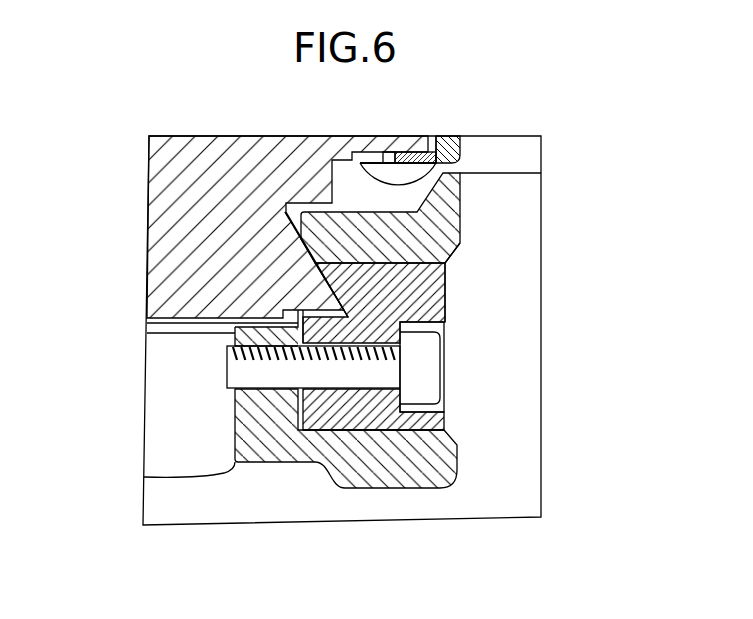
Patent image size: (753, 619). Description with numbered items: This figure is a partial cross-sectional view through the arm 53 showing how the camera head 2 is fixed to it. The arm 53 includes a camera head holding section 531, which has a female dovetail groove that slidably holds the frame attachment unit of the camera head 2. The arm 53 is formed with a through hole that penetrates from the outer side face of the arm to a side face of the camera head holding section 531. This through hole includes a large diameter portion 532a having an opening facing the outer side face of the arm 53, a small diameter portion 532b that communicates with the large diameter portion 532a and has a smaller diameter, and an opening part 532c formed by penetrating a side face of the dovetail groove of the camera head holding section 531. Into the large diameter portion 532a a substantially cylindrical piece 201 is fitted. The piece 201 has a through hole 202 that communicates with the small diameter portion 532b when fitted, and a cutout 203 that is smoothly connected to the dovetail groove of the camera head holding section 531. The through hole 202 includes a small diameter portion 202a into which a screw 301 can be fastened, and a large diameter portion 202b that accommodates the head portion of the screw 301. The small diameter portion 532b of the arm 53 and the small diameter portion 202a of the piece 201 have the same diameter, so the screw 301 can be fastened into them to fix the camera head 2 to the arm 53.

The camera head 2 is at (158, 239).
The arm 53 is at (447, 216).
The camera head holding section 531 is at (235, 431).
The large diameter portion 532a is at (423, 262).
The small diameter portion 532b is at (246, 386).
The opening part 532c is at (322, 272).
The piece 201 is at (433, 303).
The through hole 202 is at (456, 388).
The small diameter portion 202a is at (384, 388).
The large diameter portion 202b is at (445, 407).
The cutout 203 is at (321, 273).
The screw 301 is at (433, 353).